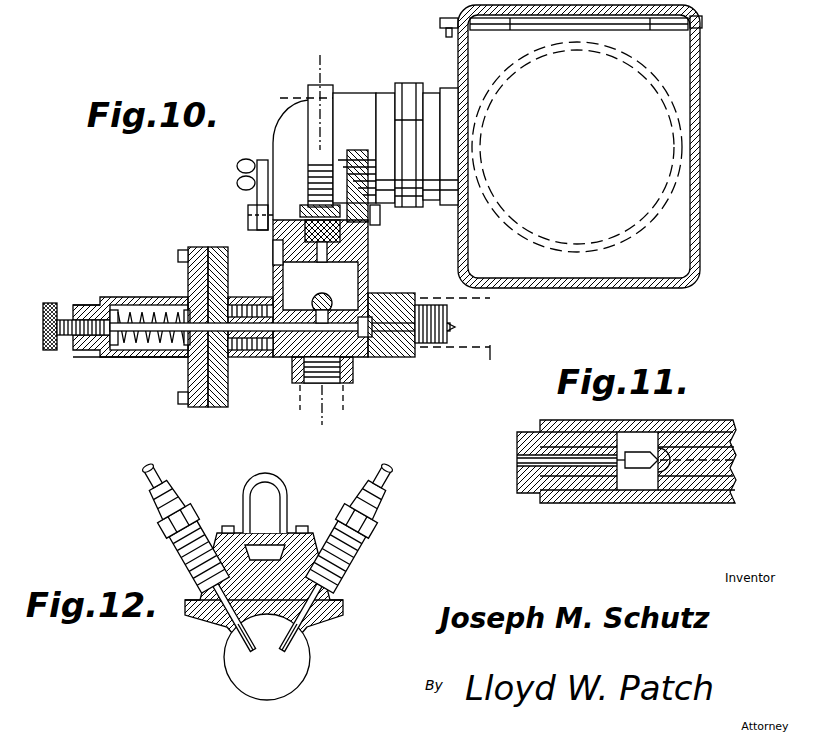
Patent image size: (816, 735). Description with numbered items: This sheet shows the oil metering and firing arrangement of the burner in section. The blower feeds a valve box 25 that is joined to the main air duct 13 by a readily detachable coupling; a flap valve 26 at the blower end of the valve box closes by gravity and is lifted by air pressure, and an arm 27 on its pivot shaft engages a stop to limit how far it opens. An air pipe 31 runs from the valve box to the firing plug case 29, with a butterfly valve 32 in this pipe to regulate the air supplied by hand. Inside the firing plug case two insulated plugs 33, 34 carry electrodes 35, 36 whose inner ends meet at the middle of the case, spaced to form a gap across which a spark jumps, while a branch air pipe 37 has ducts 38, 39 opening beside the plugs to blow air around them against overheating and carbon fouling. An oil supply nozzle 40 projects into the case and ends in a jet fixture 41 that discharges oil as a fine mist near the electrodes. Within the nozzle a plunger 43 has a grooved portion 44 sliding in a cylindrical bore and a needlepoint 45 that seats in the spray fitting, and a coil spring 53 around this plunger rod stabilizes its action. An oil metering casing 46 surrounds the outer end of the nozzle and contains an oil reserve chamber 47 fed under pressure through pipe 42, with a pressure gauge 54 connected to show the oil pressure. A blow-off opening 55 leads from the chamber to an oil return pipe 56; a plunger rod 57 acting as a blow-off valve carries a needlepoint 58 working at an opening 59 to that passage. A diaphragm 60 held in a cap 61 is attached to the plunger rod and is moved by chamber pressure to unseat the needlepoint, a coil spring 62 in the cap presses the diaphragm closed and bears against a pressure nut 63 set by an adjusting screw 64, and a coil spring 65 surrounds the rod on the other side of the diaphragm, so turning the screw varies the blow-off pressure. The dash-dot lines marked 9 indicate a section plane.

In FIG. 10, the section line 9 is at (321, 240).
In FIG. 10, the main air duct 13 is at (692, 158).
In FIG. 10, the valve box 25 is at (700, 112).
In FIG. 10, the flap valve 26 is at (665, 220).
In FIG. 10, the arm 27 is at (440, 41).
In FIG. 10, the air pipe 31 is at (356, 100).
In FIG. 10, the butterfly valve 32 is at (256, 198).
In FIG. 10, the pipe 42 is at (297, 404).
In FIG. 10, the plunger 43 is at (348, 274).
In FIG. 11, the plunger 43 is at (735, 479).
In FIG. 10, the oil metering casing 46 is at (274, 257).
In FIG. 10, the oil reserve chamber 47 is at (370, 252).
In FIG. 10, the coil spring 53 is at (335, 299).
In FIG. 10, the pressure gauge 54 is at (308, 97).
In FIG. 10, the blow-off opening 55 is at (448, 327).
In FIG. 10, the oil return pipe 56 is at (475, 357).
In FIG. 10, the plunger rod 57 is at (282, 360).
In FIG. 10, the needlepoint 58 is at (362, 370).
In FIG. 10, the opening 59 is at (393, 357).
In FIG. 10, the diaphragm 60 is at (205, 290).
In FIG. 10, the cap 61 is at (160, 358).
In FIG. 10, the coil spring 62 is at (150, 305).
In FIG. 10, the pressure nut 63 is at (112, 358).
In FIG. 10, the adjusting screw 64 is at (70, 303).
In FIG. 10, the coil spring 65 is at (230, 298).
In FIG. 11, the oil supply nozzle 40 is at (605, 504).
In FIG. 11, the jet fixture 41 is at (519, 462).
In FIG. 11, the grooved portion 44 is at (733, 428).
In FIG. 11, the needlepoint 45 is at (641, 470).
In FIG. 12, the firing plug case 29 is at (258, 660).
In FIG. 12, the insulated plug 33 is at (150, 515).
In FIG. 12, the insulated plug 34 is at (360, 508).
In FIG. 12, the electrode 35 is at (215, 658).
In FIG. 12, the electrode 36 is at (290, 650).
In FIG. 12, the branch air pipe 37 is at (275, 488).
In FIG. 12, the duct 38 is at (228, 525).
In FIG. 12, the duct 39 is at (303, 525).